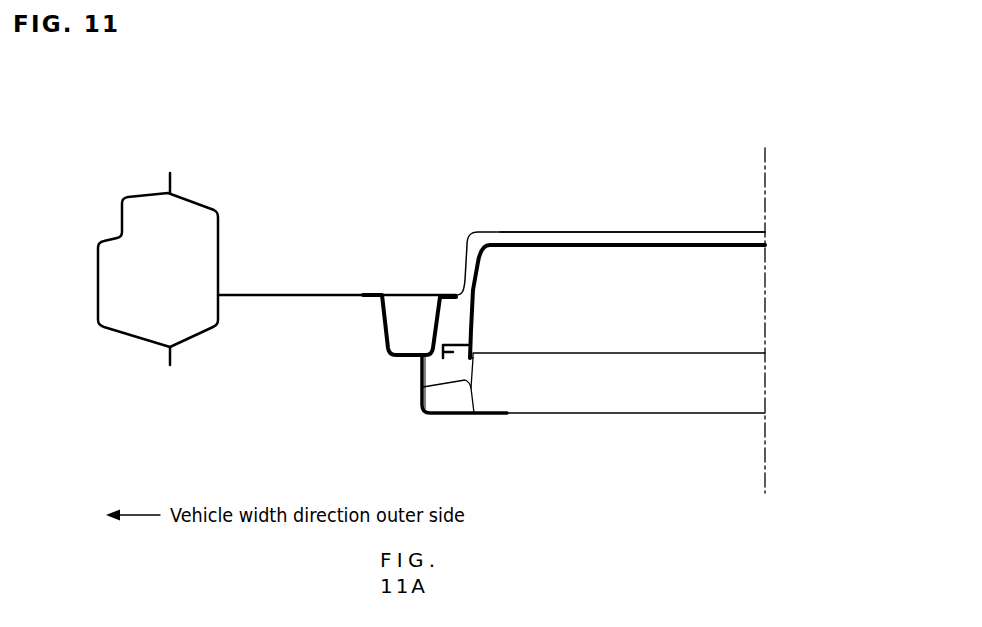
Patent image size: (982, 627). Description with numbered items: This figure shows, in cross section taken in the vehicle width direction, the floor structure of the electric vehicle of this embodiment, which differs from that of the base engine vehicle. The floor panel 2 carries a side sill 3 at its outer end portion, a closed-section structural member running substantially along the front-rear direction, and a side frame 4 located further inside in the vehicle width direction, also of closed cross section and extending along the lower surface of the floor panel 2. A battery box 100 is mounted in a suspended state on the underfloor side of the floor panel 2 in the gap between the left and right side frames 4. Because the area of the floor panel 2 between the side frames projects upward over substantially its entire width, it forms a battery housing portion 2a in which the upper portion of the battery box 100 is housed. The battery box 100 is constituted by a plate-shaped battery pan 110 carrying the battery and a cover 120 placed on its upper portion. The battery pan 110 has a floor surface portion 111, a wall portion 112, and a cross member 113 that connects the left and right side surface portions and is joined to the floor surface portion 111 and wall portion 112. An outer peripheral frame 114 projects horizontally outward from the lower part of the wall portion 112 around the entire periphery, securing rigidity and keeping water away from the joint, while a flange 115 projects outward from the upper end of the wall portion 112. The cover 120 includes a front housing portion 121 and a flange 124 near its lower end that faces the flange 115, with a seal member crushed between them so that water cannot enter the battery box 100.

The floor panel 2 is at (317, 295).
The battery housing portion 2a is at (530, 232).
The side sill 3 is at (115, 237).
The side frame 4 is at (385, 337).
The battery box 100 is at (797, 237).
The battery pan 110 is at (780, 388).
The floor surface portion 111 is at (635, 412).
The wall portion 112 is at (471, 389).
The cross member 113 is at (661, 353).
The outer peripheral frame 114 is at (453, 382).
The flange 115 is at (458, 352).
The cover 120 is at (773, 278).
The front housing portion 121 is at (635, 241).
The flange 124 is at (458, 343).